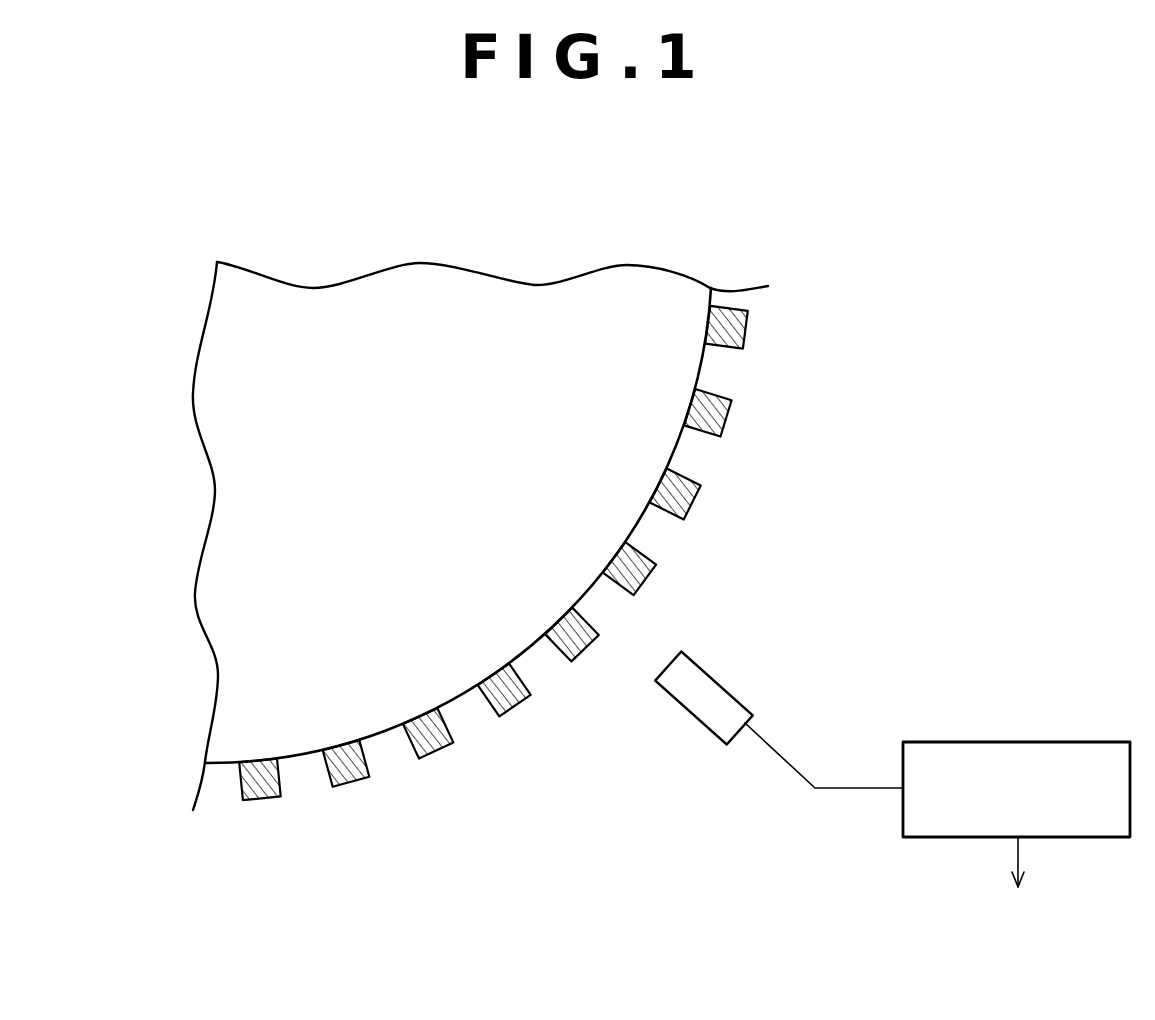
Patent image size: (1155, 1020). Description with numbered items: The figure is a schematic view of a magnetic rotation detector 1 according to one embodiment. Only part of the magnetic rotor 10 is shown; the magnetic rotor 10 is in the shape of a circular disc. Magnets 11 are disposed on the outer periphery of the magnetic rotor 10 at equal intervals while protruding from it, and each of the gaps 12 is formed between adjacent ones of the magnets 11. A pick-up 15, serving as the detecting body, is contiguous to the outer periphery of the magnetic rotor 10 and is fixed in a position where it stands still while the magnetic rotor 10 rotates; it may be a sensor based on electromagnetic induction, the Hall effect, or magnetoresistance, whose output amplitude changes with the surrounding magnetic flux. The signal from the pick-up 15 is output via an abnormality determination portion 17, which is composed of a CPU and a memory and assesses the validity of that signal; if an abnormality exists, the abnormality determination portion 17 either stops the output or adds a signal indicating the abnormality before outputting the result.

The abnormality detection device 1 is at (1047, 217).
The magnetic rotor 10 is at (625, 295).
The magnets 11 is at (747, 313).
The gaps 12 is at (718, 370).
The pick-up 15 is at (693, 682).
The abnormality determination portion 17 is at (1018, 742).